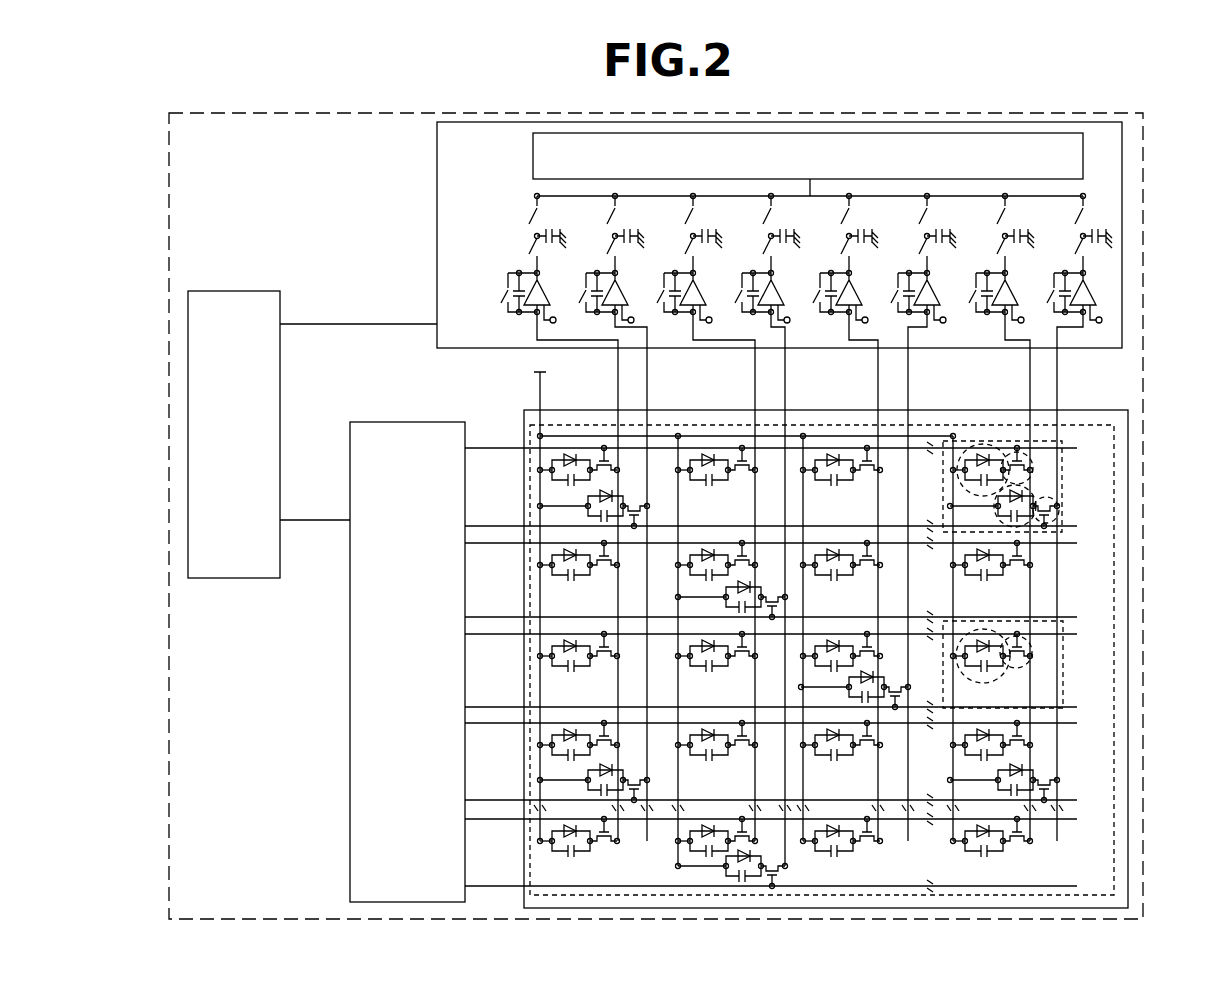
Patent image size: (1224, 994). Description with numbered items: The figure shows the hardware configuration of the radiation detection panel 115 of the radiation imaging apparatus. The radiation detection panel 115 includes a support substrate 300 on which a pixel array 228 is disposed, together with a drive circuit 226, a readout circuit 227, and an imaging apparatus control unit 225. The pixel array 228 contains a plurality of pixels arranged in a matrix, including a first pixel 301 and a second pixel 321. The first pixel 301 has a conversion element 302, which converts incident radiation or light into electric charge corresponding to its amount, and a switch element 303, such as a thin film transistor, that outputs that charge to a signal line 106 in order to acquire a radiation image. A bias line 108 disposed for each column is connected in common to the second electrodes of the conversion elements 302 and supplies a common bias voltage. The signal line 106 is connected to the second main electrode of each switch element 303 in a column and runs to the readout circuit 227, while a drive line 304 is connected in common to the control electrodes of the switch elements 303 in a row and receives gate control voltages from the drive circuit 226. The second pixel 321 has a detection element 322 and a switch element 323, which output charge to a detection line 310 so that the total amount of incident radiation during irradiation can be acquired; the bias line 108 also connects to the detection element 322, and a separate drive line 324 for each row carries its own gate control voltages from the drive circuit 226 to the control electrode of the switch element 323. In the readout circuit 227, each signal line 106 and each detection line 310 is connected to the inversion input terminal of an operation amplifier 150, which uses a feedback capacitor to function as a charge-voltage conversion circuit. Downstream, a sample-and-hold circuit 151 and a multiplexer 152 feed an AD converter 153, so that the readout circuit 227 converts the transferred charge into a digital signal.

The radiation detection panel 115 is at (176, 97).
The imaging apparatus control unit 225 is at (234, 291).
The drive circuit 226 is at (385, 422).
The readout circuit 227 is at (440, 159).
The AD converter 153 is at (1072, 157).
The multiplexer 152 is at (533, 212).
The sample-and-hold circuit 151 is at (535, 238).
The operation amplifier 150 is at (1095, 296).
The bias line 108 is at (538, 384).
The signal line 106 is at (617, 385).
The detection line 310 is at (648, 365).
The drive line 304 is at (722, 446).
The drive line 324 is at (493, 525).
The support substrate 300 is at (1128, 820).
The pixel array 228 is at (1114, 866).
The first pixel 301 is at (1063, 648).
The conversion element 302 is at (975, 444).
The switch element 303 is at (1018, 444).
The second pixel 321 is at (1062, 455).
The detection element 322 is at (1040, 481).
The switch element 323 is at (1065, 511).